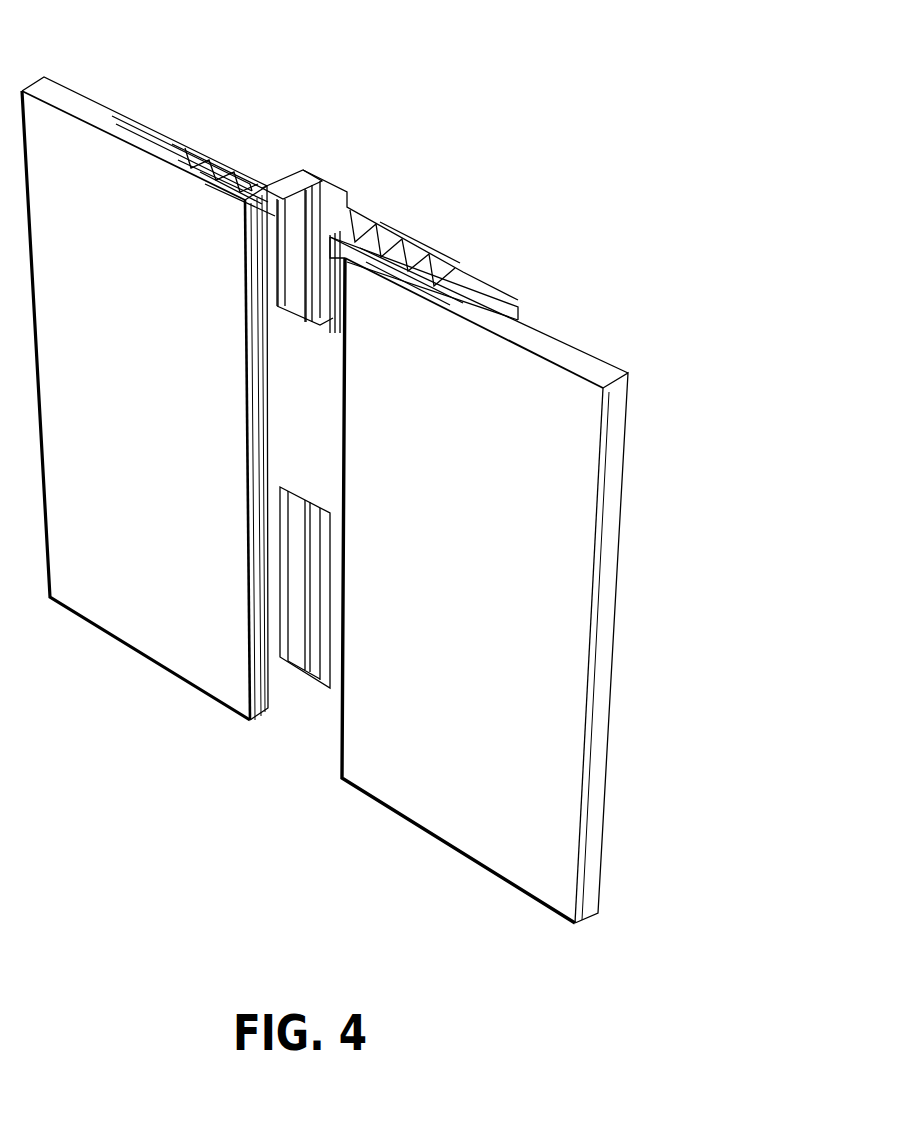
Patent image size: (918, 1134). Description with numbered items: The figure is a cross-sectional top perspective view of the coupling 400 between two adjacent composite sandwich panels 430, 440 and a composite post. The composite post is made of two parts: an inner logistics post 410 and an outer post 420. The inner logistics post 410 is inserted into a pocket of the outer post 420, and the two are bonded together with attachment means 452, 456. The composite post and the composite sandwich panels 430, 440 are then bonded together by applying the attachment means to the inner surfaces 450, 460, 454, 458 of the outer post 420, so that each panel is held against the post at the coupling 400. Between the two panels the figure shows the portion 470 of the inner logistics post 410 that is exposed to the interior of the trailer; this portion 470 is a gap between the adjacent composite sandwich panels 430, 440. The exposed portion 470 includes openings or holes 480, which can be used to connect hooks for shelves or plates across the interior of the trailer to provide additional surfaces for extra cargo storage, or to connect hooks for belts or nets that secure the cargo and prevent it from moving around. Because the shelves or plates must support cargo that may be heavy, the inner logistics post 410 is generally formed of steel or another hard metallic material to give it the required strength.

The coupling 400 is at (649, 111).
The inner logistics post 410 is at (298, 707).
The outer post 420 is at (350, 210).
The composite sandwich panel 430 is at (59, 98).
The composite sandwich panel 440 is at (580, 362).
The inner surface of the outer post 450 is at (165, 127).
The attachment means 452 is at (238, 180).
The inner surface of the outer post 454 is at (222, 206).
The attachment means 456 is at (397, 258).
The inner surface of the outer post 458 is at (389, 285).
The inner surface of the outer post 460 is at (491, 297).
The exposed portion of the inner logistics post 470 is at (340, 433).
The openings or holes 480 is at (316, 567).